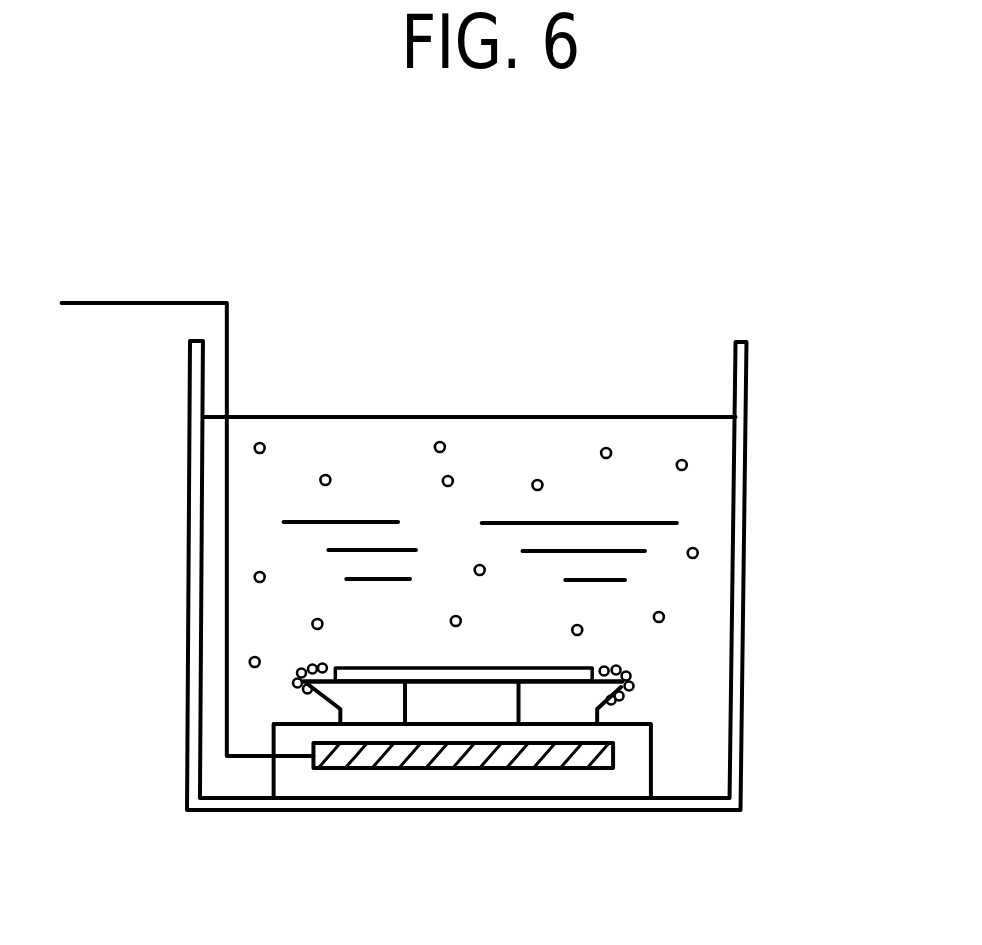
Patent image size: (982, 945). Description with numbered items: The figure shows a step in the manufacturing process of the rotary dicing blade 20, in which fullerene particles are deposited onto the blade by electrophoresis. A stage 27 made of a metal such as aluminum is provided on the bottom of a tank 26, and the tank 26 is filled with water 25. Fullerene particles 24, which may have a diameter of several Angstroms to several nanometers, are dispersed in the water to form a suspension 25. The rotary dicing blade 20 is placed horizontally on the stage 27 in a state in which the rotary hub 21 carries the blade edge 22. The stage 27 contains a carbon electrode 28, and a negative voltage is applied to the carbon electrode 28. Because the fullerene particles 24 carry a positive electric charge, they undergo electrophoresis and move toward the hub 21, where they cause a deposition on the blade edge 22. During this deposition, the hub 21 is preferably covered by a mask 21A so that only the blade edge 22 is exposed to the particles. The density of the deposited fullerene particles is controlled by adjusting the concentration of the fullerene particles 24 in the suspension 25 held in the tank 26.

The rotary dicing blade 20 is at (576, 715).
The rotary hub 21 is at (585, 695).
The mask 21A is at (502, 667).
The blade edge 22 is at (628, 679).
The fullerene particles 24 is at (608, 447).
The water 25 is at (715, 512).
The tank 26 is at (743, 789).
The stage 27 is at (300, 788).
The carbon electrode 28 is at (412, 765).